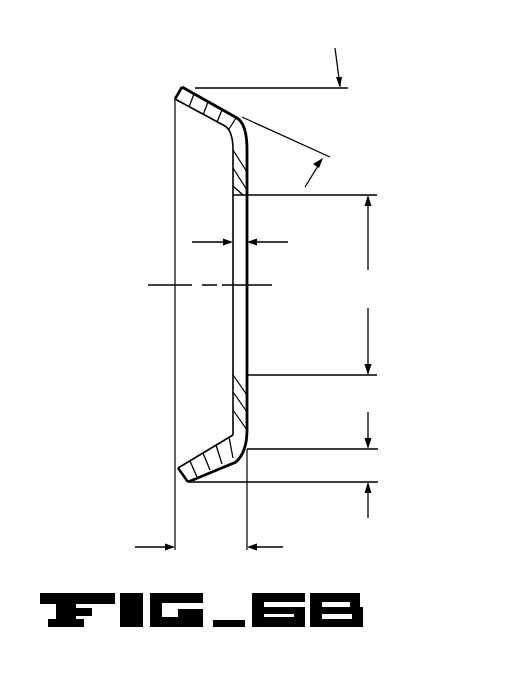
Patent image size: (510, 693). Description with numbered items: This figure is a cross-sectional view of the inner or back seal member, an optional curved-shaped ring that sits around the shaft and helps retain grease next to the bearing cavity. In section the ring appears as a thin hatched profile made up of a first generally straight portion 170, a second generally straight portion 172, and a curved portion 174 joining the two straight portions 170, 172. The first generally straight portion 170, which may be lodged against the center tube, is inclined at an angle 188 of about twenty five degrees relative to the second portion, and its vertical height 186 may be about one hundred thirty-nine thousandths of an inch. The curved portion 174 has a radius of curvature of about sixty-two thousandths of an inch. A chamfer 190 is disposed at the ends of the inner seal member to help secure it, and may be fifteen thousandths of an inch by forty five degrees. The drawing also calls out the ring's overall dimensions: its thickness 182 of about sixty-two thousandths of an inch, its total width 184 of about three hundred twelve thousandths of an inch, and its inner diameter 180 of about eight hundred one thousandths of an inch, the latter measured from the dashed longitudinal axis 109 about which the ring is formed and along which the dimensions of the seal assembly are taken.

The longitudinal axis 109 is at (160, 283).
The first generally straight portion 170 is at (197, 113).
The second generally straight portion 172 is at (230, 160).
The curved portion 174 is at (232, 440).
The inner diameter 180 is at (367, 285).
The thickness 182 is at (268, 242).
The total width 184 is at (209, 548).
The vertical height 186 is at (367, 465).
The angle 188 is at (300, 117).
The chamfer 190 is at (181, 86).